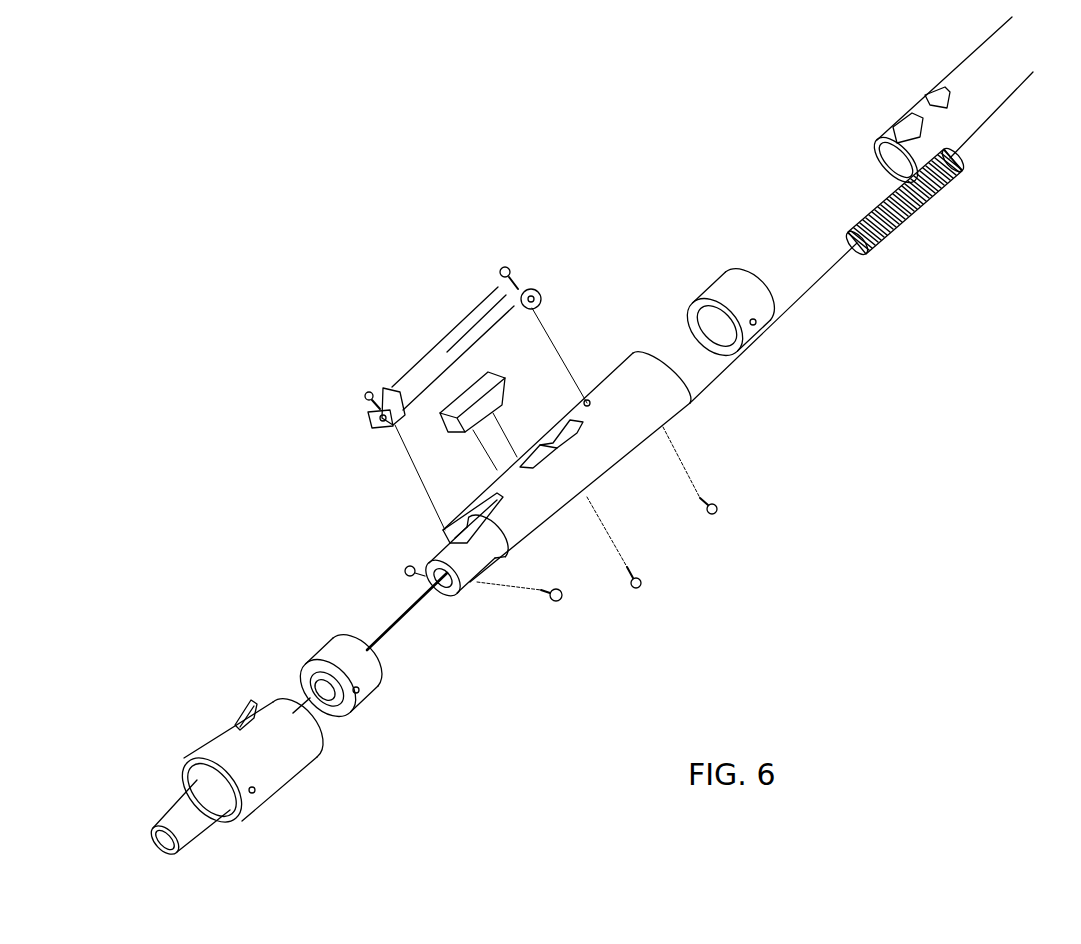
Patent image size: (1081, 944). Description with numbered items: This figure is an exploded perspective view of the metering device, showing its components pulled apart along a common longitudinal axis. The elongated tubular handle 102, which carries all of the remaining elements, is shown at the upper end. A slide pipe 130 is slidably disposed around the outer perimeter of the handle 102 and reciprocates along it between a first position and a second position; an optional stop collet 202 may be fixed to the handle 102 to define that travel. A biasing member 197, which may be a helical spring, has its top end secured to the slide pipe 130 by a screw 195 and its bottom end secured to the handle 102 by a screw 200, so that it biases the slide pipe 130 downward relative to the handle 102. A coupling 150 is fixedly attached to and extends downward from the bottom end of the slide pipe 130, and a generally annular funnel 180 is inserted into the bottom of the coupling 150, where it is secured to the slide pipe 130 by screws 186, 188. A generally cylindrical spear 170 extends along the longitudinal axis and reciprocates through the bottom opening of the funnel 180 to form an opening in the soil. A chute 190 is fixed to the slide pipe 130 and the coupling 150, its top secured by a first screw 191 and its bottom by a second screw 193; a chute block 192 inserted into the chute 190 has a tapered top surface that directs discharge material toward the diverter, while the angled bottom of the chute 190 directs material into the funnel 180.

The handle 102 is at (923, 98).
The slide pipe 130 is at (690, 405).
The coupling 150 is at (215, 752).
The spear 170 is at (153, 827).
The funnel 180 is at (383, 697).
The screw 186 is at (550, 605).
The screw 188 is at (407, 575).
The chute 190 is at (448, 342).
The first screw 191 is at (515, 266).
The chute block 192 is at (453, 417).
The second screw 193 is at (372, 418).
The screw 195 is at (717, 505).
The biasing member 197 is at (940, 195).
The screw 200 is at (640, 585).
The stop collet 202 is at (707, 293).